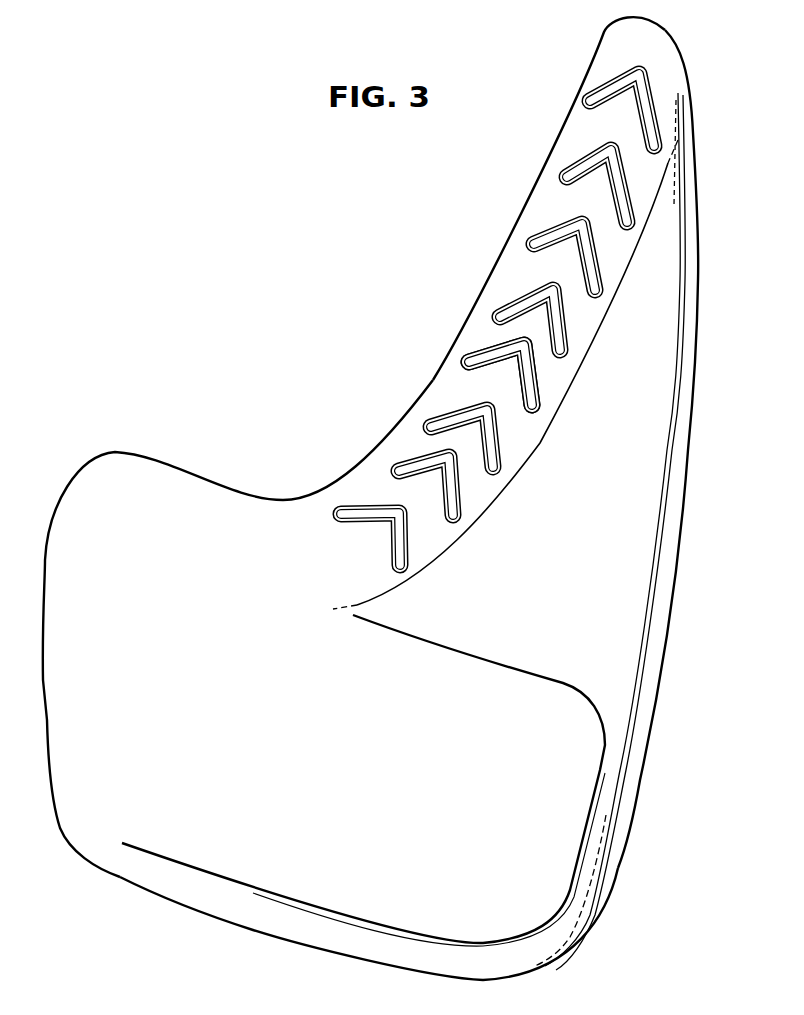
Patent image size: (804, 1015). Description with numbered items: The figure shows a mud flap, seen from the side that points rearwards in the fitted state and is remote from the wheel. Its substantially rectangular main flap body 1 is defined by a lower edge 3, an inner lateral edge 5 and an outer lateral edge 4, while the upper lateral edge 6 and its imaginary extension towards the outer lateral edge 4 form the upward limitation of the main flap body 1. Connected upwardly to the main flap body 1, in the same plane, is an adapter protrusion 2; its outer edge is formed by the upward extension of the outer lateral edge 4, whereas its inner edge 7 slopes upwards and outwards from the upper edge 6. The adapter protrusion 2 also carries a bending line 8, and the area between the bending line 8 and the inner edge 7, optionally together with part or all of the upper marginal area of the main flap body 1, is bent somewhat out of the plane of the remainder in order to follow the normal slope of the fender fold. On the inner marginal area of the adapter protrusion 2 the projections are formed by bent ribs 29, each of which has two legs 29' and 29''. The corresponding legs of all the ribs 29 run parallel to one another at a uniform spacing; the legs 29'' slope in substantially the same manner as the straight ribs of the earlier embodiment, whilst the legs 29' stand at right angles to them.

The main flap body 1 is at (567, 863).
The adapter protrusion 2 is at (648, 512).
The lower edge 3 is at (277, 935).
The outer lateral edge 4 is at (667, 638).
The inner lateral edge 5 is at (53, 785).
The upper lateral edge 6 is at (202, 477).
The inner edge 7 is at (517, 239).
The bending line 8 is at (570, 400).
The bent ribs 29 is at (492, 319).
The leg 29' is at (482, 350).
The leg 29'' is at (533, 407).